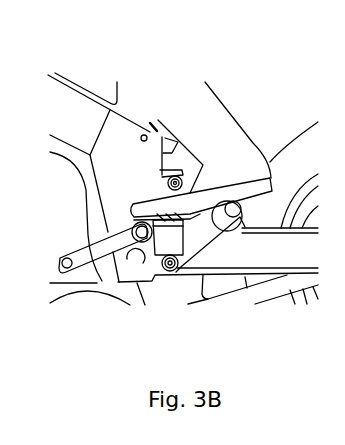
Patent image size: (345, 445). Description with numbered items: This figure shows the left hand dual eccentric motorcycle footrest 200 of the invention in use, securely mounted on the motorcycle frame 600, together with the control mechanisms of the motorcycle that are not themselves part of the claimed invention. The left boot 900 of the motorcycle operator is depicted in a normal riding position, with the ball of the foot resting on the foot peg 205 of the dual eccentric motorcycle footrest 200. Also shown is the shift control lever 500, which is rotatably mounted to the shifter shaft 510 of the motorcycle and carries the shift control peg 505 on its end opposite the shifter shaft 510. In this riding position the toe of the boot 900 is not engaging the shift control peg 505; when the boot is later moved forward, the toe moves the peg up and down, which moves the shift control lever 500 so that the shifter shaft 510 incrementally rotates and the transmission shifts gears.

The motorcycle frame 600 is at (128, 157).
The left boot 900 is at (228, 133).
The shift control peg 505 is at (135, 229).
The shifter shaft 510 is at (66, 258).
The shift control lever 500 is at (90, 252).
The foot peg 205 is at (238, 209).
The dual eccentric motorcycle footrest 200 is at (228, 253).